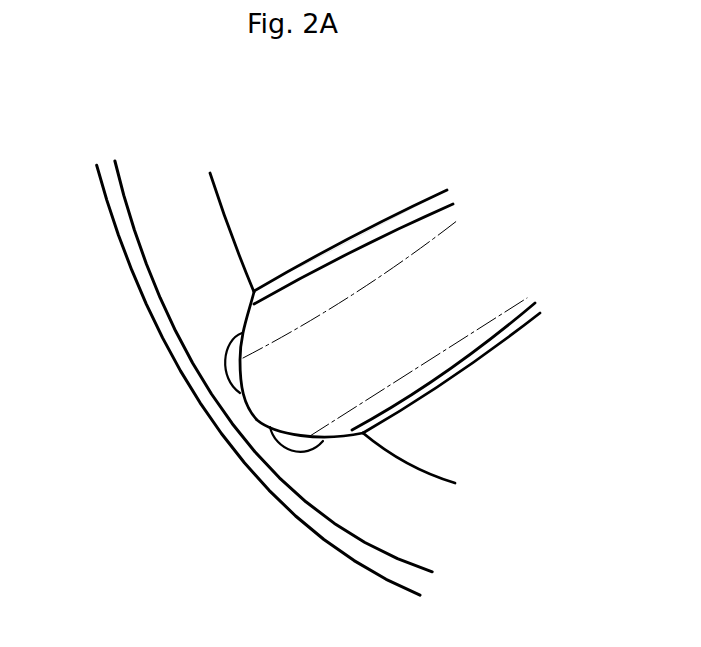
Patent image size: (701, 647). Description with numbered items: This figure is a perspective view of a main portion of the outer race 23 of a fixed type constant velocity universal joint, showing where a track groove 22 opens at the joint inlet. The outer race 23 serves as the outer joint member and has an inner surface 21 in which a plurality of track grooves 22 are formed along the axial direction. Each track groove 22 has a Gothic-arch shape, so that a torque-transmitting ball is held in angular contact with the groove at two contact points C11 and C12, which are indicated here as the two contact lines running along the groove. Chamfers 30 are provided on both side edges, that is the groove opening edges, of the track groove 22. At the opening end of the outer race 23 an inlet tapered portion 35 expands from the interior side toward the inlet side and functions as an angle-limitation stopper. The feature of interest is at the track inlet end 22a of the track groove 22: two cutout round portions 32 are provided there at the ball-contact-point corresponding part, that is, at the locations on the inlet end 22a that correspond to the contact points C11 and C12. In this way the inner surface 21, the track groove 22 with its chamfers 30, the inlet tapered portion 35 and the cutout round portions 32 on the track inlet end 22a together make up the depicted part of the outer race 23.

The inner surface 21 is at (265, 203).
The track groove 22 is at (403, 297).
The track inlet end 22a is at (245, 410).
The outer race 23 is at (337, 550).
The chamfer 30 is at (420, 214).
The cutout round portion 32 is at (243, 360).
The inlet tapered portion 35 is at (200, 300).
The contact point C11 is at (442, 357).
The contact point C12 is at (325, 313).